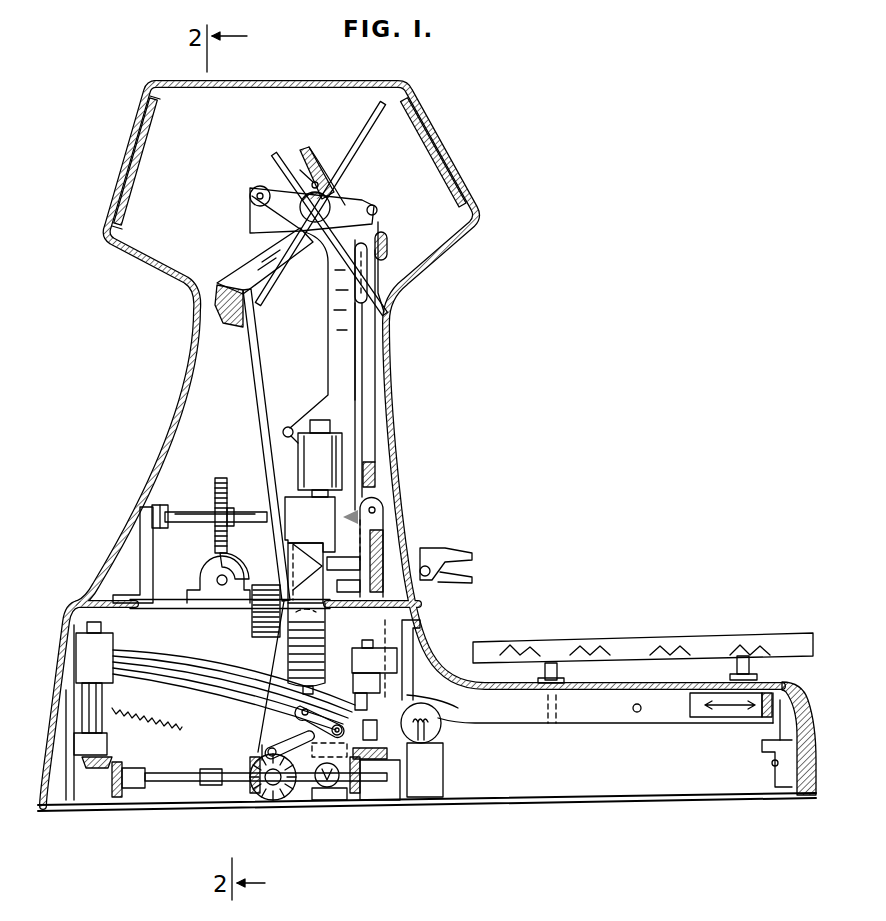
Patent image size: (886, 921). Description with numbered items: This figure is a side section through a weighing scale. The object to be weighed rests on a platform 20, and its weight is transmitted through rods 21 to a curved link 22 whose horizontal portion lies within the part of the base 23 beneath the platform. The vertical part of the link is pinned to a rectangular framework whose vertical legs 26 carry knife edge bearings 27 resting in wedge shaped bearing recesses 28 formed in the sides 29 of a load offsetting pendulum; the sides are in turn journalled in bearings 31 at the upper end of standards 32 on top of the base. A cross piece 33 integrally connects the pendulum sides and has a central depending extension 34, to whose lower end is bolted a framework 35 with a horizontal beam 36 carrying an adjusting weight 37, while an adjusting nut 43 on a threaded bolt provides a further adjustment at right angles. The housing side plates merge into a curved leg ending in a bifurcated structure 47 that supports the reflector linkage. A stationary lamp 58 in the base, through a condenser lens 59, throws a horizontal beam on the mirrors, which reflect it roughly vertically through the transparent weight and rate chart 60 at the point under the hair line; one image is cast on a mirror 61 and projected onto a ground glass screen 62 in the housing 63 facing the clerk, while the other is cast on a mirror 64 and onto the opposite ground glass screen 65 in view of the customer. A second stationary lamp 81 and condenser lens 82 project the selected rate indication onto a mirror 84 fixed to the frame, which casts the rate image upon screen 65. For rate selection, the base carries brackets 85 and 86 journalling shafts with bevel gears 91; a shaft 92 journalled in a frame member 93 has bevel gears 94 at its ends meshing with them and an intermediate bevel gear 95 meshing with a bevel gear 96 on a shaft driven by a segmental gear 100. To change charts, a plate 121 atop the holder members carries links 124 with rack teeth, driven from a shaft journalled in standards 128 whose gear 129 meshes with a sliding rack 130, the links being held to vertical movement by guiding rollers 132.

The platform 20 is at (587, 645).
The rods 21 is at (558, 672).
The curved link 22 is at (519, 722).
The base 23 is at (616, 797).
The vertical legs 26 is at (372, 416).
The knife edge bearings 27 is at (376, 207).
The wedge shaped bearing recesses 28 is at (378, 218).
The sides of pendulum 29 is at (311, 162).
The bearings 31 is at (333, 210).
The standards 32 is at (330, 292).
The cross piece 33 is at (240, 327).
The central depending extension 34 is at (262, 408).
The framework 35 is at (318, 624).
The horizontal beam 36 is at (310, 524).
The adjusting weight 37 is at (312, 458).
The adjusting nut 43 is at (256, 624).
The bifurcated structure 47 is at (330, 742).
The stationary lamp 58 is at (439, 734).
The condenser lens 59 is at (430, 702).
The weight and rate chart 60 is at (205, 694).
The mirror 61 is at (368, 130).
The ground glass screen 62 is at (436, 130).
The housing 63 is at (376, 82).
The mirror 64 is at (276, 154).
The ground glass screen 65 is at (138, 176).
The stationary lamp 81 is at (345, 790).
The condenser lens 82 is at (326, 788).
The mirror 84 is at (382, 268).
The bracket 85 is at (88, 640).
The bracket 86 is at (406, 660).
The bevel gears 91 is at (95, 768).
The shaft 92 is at (200, 783).
The frame member 93 is at (225, 772).
The bevel gears 94 is at (122, 792).
The bevel gear 95 is at (255, 792).
The bevel gear 96 is at (272, 801).
The segmental gear 100 is at (147, 734).
The plate 121 is at (120, 653).
The links 124 is at (232, 572).
The standards 128 is at (140, 548).
The gear 129 is at (221, 483).
The rack teeth 130 is at (215, 560).
The guiding rollers 132 is at (160, 505).